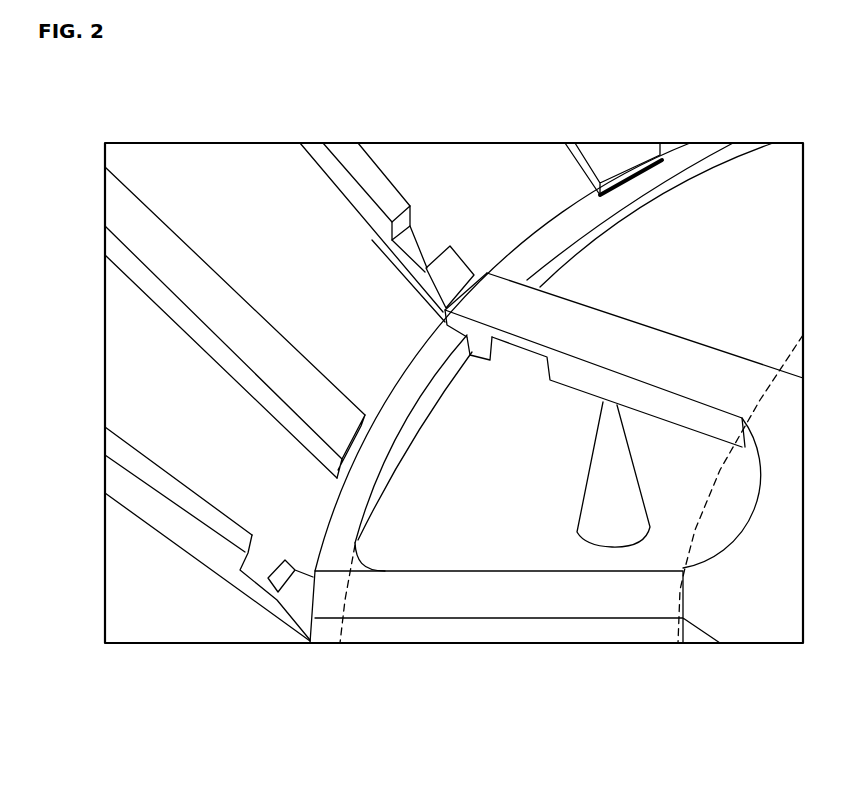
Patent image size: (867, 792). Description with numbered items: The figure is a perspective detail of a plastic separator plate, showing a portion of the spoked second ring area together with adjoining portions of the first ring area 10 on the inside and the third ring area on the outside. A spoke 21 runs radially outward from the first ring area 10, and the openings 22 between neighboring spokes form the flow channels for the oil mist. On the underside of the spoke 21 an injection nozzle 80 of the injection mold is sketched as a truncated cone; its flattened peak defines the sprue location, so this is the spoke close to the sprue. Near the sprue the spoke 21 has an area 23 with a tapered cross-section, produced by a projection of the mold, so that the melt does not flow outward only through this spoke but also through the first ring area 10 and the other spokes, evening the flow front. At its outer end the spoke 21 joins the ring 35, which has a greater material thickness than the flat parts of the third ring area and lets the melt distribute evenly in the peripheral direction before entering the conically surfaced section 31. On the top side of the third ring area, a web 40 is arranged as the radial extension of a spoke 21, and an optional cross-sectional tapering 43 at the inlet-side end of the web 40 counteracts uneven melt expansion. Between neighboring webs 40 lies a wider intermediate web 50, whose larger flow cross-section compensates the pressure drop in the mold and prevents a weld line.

The first ring area 10 is at (781, 590).
The spoke 21 is at (685, 357).
The opening 22 is at (474, 521).
The area with tapered cross-sectional area 23 is at (526, 365).
The conical section 31 is at (191, 446).
The ring 35 is at (572, 252).
The web 40 is at (355, 165).
The cross-sectional tapering 43 is at (418, 255).
The intermediate web 50 is at (218, 300).
The injection nozzle 80 is at (610, 470).